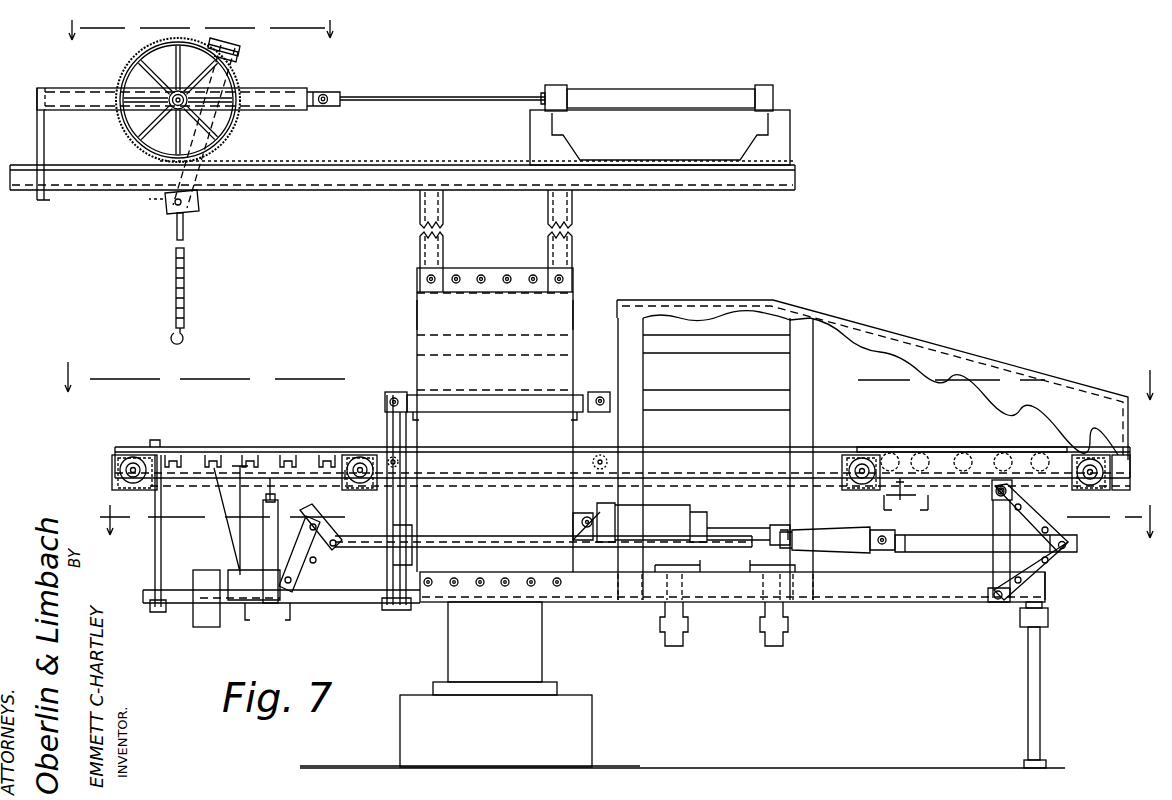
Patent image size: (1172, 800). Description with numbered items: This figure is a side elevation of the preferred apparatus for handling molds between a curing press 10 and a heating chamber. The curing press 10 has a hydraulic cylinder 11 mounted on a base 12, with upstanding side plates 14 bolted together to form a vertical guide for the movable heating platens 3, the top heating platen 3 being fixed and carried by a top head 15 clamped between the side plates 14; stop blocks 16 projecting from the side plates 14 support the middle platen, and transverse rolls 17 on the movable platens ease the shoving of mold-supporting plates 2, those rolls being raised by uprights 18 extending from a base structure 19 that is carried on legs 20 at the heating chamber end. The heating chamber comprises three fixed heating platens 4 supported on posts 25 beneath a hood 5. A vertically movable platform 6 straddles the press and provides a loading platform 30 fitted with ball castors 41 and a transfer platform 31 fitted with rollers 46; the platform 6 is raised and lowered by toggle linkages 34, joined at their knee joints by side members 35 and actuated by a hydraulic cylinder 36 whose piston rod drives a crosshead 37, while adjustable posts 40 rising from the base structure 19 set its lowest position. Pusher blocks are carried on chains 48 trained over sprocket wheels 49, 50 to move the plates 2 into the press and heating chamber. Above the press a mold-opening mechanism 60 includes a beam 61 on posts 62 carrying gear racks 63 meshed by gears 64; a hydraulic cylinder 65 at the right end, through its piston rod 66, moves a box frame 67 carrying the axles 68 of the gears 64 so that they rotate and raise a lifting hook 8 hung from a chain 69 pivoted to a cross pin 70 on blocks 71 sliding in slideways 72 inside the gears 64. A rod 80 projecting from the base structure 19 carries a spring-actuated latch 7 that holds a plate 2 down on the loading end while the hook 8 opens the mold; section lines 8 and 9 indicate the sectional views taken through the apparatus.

The mold-supporting plate 2 is at (276, 447).
The heating platen 3 is at (512, 338).
The fixed heating platen 4 is at (755, 346).
The hood 5 is at (1003, 364).
The platform 6 is at (1124, 472).
The spring-actuated latch 7 is at (152, 447).
The lifting hook 8 is at (197, 338).
The section line 9- 9 is at (620, 521).
The curing press 10 is at (590, 284).
The hydraulic cylinder 11 is at (451, 649).
The base 12 is at (580, 741).
The side plate 14 is at (417, 319).
The top head 15 is at (566, 325).
The stop block 16 is at (414, 419).
The transverse roll 17 is at (388, 393).
The upright 18 is at (389, 516).
The base structure 19 is at (607, 598).
The leg 20 is at (1041, 697).
The post 25 is at (622, 450).
The loading platform 30 is at (210, 440).
The transfer platform 31 is at (1021, 439).
The toggle linkage 34 is at (320, 560).
The side member 35 is at (498, 546).
The hydraulic cylinder 36 is at (673, 516).
The crosshead 37 is at (970, 549).
The adjustable post 40 is at (279, 541).
The ball castor 41 is at (222, 448).
The roller 46 is at (896, 455).
The chain 48 is at (336, 484).
The sprocket wheel 49 is at (116, 478).
The sprocket wheel 50 is at (369, 486).
The upper assembly 60 is at (347, 196).
The beam 61 is at (282, 176).
The post 62 is at (443, 255).
The gear rack 63 is at (377, 161).
The gear 64 is at (231, 136).
The hydraulic cylinder 65 is at (673, 92).
The piston rod 66 is at (462, 96).
The box frame 67 is at (283, 90).
The axle 68 is at (194, 123).
The chain 69 is at (187, 284).
The cross pin 70 is at (198, 200).
The block 71 is at (144, 205).
The slideway 72 is at (190, 212).
The rod 80 is at (157, 547).